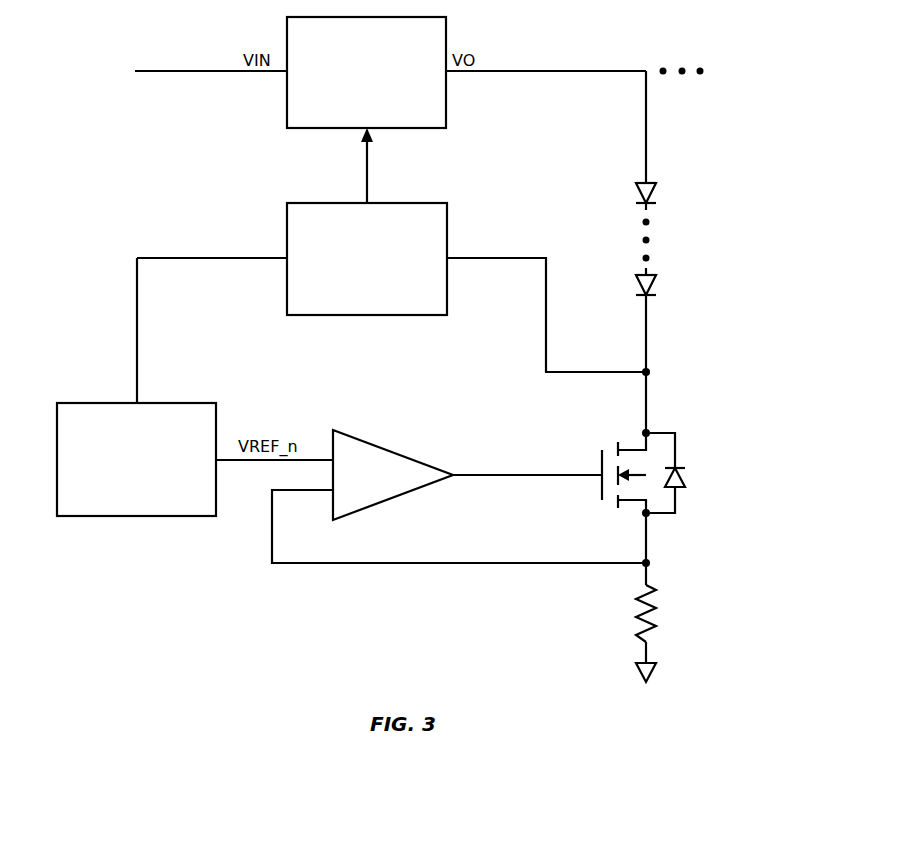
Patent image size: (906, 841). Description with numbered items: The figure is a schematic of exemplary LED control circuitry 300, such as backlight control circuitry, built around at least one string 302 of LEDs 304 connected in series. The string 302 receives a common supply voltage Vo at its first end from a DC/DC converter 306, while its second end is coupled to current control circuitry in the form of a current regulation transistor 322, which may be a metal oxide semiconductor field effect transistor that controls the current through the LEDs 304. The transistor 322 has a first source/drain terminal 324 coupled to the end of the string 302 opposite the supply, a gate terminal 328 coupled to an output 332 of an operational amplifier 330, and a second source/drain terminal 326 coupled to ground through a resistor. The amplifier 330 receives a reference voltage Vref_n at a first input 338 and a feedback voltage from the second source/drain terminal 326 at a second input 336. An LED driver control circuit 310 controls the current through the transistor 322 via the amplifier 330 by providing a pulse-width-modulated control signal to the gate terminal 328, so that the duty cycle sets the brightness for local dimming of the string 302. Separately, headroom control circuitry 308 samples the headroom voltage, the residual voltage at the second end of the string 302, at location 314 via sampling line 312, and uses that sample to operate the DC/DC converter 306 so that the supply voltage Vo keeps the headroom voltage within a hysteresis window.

The LED control circuitry 300 is at (716, 96).
The string of LEDs 302 is at (664, 236).
The LED 304 is at (658, 275).
The DC/DC converter 306 is at (282, 97).
The headroom control circuitry 308 is at (282, 196).
The LED driver control circuit 310 is at (82, 382).
The sampling line 312 is at (558, 333).
The location 314 is at (651, 373).
The current regulation transistor 322 is at (583, 444).
The first source/drain terminal 324 is at (654, 432).
The second source/drain terminal 326 is at (654, 518).
The gate terminal 328 is at (593, 496).
The operational amplifier 330 is at (405, 440).
The output 332 is at (476, 482).
The second input 336 is at (332, 494).
The first input 338 is at (332, 456).